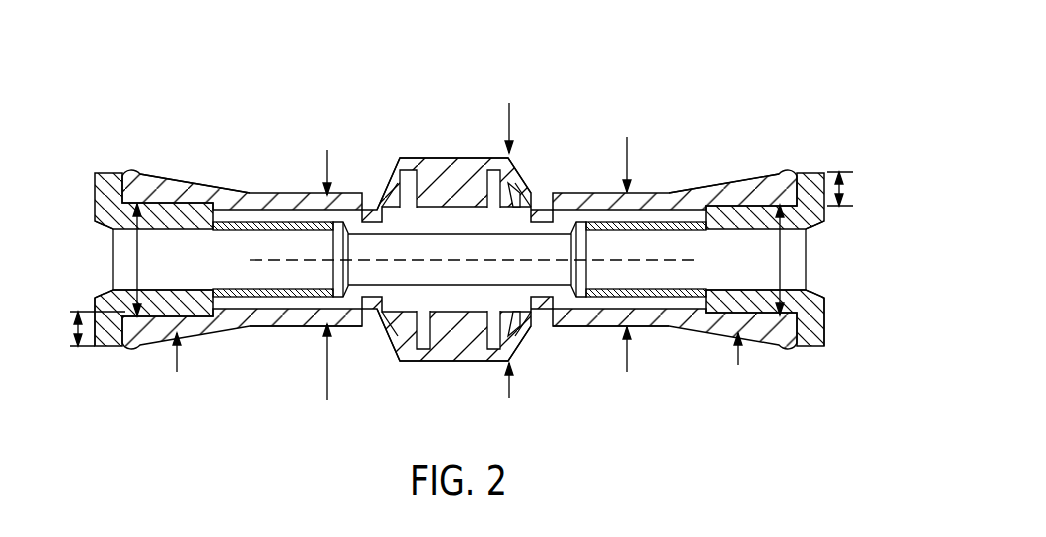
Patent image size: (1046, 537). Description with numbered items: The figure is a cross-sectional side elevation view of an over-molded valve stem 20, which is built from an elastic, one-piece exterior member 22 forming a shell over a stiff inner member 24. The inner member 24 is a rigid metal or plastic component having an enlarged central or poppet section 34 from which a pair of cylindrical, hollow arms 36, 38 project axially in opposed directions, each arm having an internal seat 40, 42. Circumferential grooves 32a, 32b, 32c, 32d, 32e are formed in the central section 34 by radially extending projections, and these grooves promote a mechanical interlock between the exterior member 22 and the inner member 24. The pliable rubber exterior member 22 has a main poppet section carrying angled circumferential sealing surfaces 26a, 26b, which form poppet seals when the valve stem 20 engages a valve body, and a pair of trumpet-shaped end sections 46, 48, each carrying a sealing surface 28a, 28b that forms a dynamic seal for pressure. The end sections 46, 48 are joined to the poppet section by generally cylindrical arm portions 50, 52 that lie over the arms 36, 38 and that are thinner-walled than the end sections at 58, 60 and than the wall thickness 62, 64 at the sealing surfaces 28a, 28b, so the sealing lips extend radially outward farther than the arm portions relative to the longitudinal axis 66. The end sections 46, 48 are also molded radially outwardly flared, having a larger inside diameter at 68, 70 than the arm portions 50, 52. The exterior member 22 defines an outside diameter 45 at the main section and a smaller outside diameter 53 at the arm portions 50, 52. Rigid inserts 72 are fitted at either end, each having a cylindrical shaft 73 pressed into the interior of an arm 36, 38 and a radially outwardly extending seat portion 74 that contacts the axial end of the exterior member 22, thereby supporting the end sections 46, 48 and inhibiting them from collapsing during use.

The valve stem 20 is at (232, 90).
The exterior member 22 is at (685, 192).
The inner member 24 is at (560, 328).
The sealing surface 26a is at (530, 182).
The sealing surface 26b is at (387, 183).
The sealing surface 28a is at (778, 347).
The sealing surface 28b is at (127, 347).
The groove 32a is at (387, 300).
The groove 32b is at (412, 322).
The groove 32c is at (462, 326).
The groove 32d is at (505, 206).
The groove 32e is at (533, 206).
The central section 34 is at (452, 207).
The arm 36 is at (618, 215).
The arm 38 is at (287, 198).
The internal seat 40 is at (572, 238).
The internal seat 42 is at (340, 252).
The outside diameter 45 is at (509, 115).
The end section 46 is at (744, 185).
The end section 48 is at (172, 187).
The arm portion 50 is at (592, 328).
The arm portion 52 is at (291, 329).
The outside diameter 53 is at (327, 150).
The end section thickness 58 is at (738, 365).
The end section thickness 60 is at (177, 372).
The wall thickness 62 is at (841, 189).
The wall thickness 64 is at (76, 330).
The longitudinal axis 66 is at (672, 262).
The inside diameter 68 is at (779, 259).
The inside diameter 70 is at (137, 257).
The insert 72 is at (100, 243).
The shaft 73 is at (253, 291).
The seat portion 74 is at (110, 343).